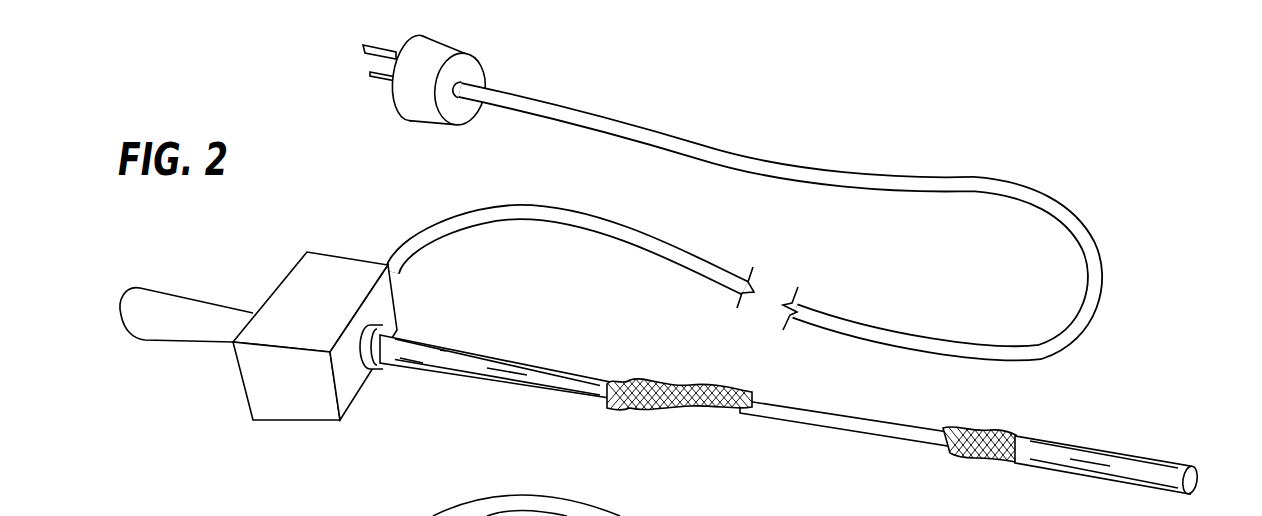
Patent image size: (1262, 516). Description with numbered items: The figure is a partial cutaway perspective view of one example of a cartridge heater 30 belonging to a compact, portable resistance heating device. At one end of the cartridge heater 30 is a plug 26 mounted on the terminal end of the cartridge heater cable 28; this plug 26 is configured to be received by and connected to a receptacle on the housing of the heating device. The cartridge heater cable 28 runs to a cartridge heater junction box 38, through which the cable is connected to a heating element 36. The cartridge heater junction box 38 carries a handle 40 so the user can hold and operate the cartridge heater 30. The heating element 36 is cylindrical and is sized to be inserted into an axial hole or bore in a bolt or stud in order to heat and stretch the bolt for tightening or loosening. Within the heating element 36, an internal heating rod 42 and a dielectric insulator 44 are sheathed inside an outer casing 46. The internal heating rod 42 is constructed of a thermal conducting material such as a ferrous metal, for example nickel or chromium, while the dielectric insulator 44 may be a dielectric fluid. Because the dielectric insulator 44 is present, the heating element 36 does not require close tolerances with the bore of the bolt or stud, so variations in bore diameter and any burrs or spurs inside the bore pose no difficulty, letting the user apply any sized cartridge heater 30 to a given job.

The plug 26 is at (415, 100).
The cartridge heater cable 28 is at (703, 155).
The cartridge heater 30 is at (1069, 133).
The heating element 36 is at (1148, 445).
The cartridge heater junction box 38 is at (297, 288).
The handle 40 is at (163, 325).
The internal heating rod 42 is at (843, 422).
The dielectric insulator 44 is at (643, 407).
The outer casing 46 is at (475, 363).